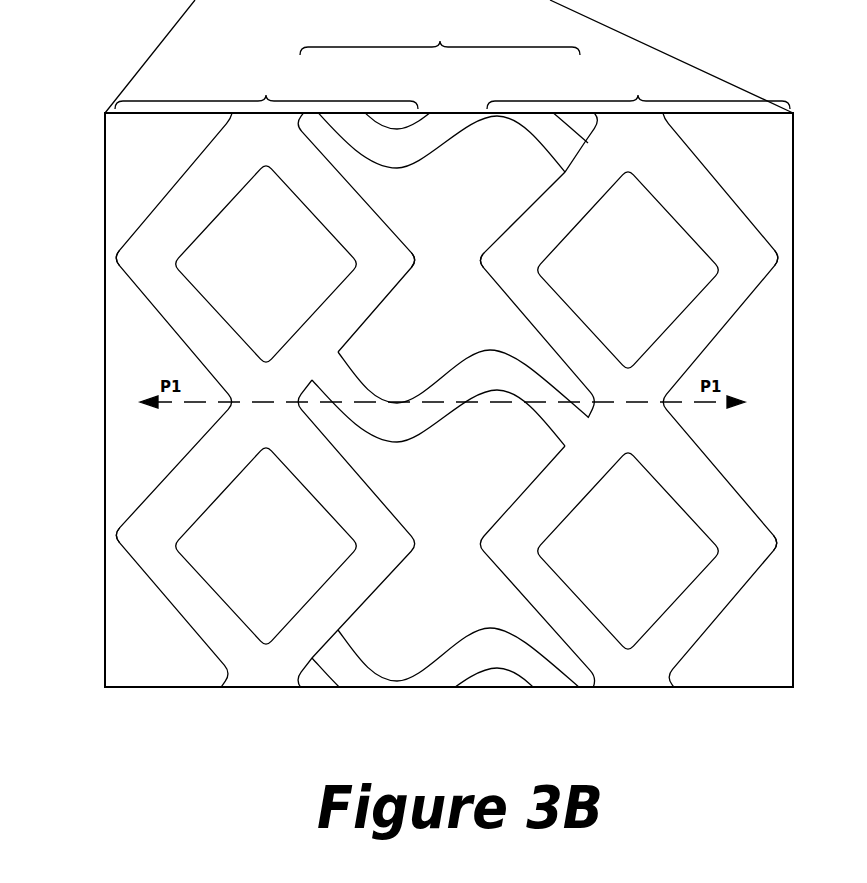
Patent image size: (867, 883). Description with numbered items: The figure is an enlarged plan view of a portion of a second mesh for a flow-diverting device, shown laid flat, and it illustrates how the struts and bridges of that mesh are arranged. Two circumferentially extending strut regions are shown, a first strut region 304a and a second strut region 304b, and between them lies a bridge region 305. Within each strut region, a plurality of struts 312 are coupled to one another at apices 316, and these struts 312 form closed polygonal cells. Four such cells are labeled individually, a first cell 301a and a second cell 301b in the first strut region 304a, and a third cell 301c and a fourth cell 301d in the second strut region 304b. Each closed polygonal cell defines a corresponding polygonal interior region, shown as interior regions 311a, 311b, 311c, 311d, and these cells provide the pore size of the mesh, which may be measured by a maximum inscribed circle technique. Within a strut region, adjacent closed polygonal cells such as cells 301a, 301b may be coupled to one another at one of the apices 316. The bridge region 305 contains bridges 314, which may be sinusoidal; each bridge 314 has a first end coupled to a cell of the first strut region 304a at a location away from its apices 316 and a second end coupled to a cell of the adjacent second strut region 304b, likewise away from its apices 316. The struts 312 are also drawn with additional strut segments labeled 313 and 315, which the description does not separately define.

The first closed polygonal cell 301a is at (195, 256).
The second closed polygonal cell 301b is at (200, 533).
The third closed polygonal cell 301c is at (696, 259).
The fourth closed polygonal cell 301d is at (697, 540).
The first strut region 304a is at (266, 89).
The second strut region 304b is at (638, 89).
The bridge region 305 is at (440, 36).
The polygonal interior region 311a is at (266, 264).
The polygonal interior region 311b is at (266, 546).
The polygonal interior region 311c is at (628, 270).
The polygonal interior region 311d is at (628, 551).
The strut 312 is at (187, 170).
The connecting strut 313 is at (358, 335).
The bridge 314 is at (462, 362).
The connecting strut 315 is at (522, 487).
The apex 316 is at (113, 258).